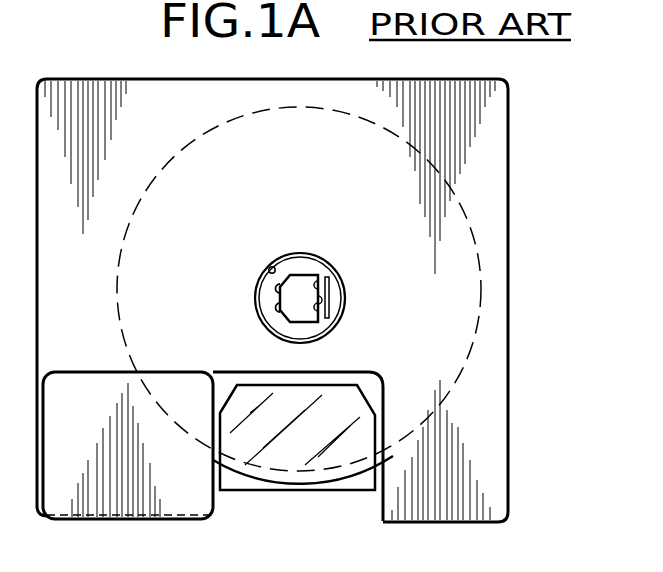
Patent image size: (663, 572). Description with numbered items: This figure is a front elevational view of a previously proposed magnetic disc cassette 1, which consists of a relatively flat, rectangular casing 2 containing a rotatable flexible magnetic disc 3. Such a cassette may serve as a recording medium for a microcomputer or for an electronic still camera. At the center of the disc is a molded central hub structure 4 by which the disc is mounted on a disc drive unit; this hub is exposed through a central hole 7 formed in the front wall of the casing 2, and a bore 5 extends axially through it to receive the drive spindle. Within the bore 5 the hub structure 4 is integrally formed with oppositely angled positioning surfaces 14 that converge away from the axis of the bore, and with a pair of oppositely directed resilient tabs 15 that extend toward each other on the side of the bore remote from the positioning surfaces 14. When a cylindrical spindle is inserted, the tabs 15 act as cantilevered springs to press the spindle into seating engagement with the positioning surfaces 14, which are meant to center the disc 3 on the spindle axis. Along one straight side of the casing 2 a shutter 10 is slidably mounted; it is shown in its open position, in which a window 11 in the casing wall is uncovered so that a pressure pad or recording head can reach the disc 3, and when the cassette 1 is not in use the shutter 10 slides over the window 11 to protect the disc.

The magnetic disc cassette 1 is at (516, 115).
The casing 2 is at (499, 142).
The flexible magnetic disc 3 is at (474, 254).
The central hub structure 4 is at (295, 262).
The bore 5 is at (312, 280).
The central hole 7 is at (270, 267).
The shutter 10 is at (90, 510).
The window 11 is at (222, 482).
The positioning surfaces 14 is at (276, 306).
The resilient tabs 15 is at (321, 300).